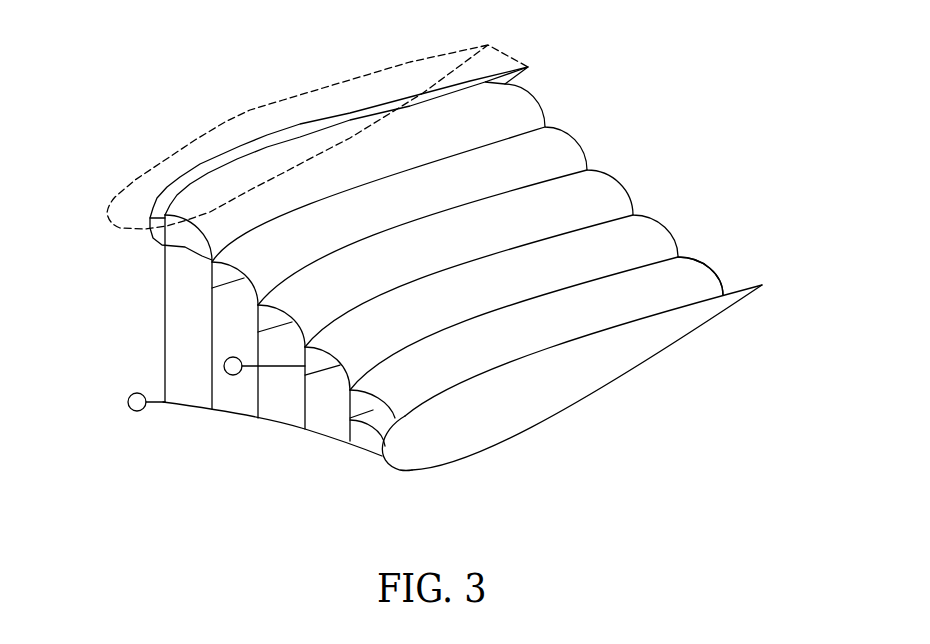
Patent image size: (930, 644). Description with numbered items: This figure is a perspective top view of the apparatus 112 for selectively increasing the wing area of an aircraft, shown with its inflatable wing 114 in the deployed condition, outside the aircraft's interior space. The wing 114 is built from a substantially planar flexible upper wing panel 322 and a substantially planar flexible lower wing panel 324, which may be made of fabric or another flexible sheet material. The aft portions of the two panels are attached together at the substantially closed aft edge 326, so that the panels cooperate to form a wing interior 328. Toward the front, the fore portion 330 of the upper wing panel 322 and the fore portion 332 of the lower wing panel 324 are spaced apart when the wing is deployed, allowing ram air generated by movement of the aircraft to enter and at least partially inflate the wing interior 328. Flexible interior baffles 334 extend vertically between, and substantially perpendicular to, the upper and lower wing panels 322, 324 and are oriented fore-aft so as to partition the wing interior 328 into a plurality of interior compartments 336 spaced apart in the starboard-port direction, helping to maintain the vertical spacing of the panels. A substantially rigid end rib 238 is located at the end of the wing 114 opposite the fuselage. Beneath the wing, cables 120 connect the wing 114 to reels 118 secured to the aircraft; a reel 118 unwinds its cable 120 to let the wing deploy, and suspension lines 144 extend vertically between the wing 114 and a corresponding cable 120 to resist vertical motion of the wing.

The apparatus 112 is at (278, 81).
The inflatable wing 114 is at (645, 140).
The reel 118 is at (128, 402).
The cable 120 is at (180, 408).
The suspension line 144 is at (163, 325).
The end rib 238 is at (539, 397).
The upper wing panel 322 is at (462, 372).
The lower wing panel 324 is at (370, 444).
The aft edge 326 is at (719, 270).
The wing interior 328 is at (188, 248).
The fore portion of upper wing panel 330 is at (333, 353).
The fore portion of lower wing panel 332 is at (313, 375).
The interior baffle 334 is at (223, 275).
The interior compartment 336 is at (434, 195).